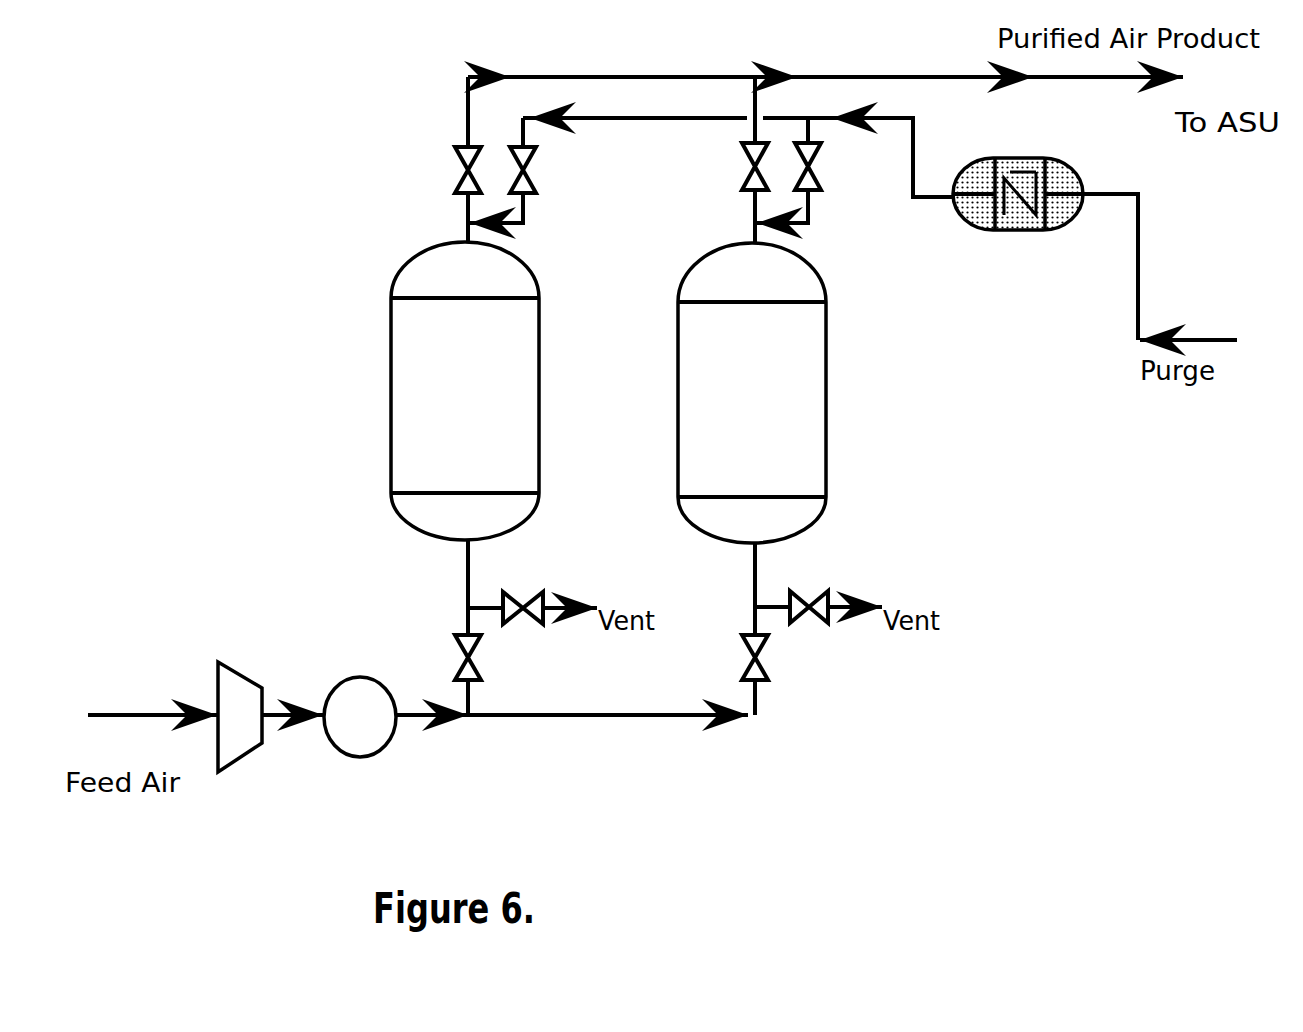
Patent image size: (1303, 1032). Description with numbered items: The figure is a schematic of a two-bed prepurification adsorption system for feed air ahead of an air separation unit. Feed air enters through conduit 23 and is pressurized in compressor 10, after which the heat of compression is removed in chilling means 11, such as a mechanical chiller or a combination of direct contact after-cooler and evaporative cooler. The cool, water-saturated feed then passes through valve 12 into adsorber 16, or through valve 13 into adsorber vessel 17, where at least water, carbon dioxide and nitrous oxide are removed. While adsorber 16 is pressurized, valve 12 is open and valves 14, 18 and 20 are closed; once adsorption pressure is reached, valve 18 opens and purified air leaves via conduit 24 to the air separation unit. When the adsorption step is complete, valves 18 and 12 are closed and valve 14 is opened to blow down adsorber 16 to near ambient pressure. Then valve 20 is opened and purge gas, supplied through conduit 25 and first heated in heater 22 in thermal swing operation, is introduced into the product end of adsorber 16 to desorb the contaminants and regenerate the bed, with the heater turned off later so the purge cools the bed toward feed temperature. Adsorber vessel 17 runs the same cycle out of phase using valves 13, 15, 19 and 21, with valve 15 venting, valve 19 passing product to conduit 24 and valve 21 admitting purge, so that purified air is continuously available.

The compressor 10 is at (240, 717).
The chilling means 11 is at (360, 717).
The valve 12 is at (450, 657).
The valve 13 is at (739, 657).
The valve 14 is at (525, 591).
The valve 15 is at (814, 590).
The adsorber 16 is at (465, 391).
The adsorber vessel 17 is at (752, 393).
The valve 18 is at (450, 170).
The valve 19 is at (738, 166).
The valve 20 is at (543, 170).
The valve 21 is at (830, 166).
The heater 22 is at (1018, 224).
The conduit 23 is at (152, 709).
The conduit 24 is at (823, 88).
The conduit 25 is at (1188, 331).